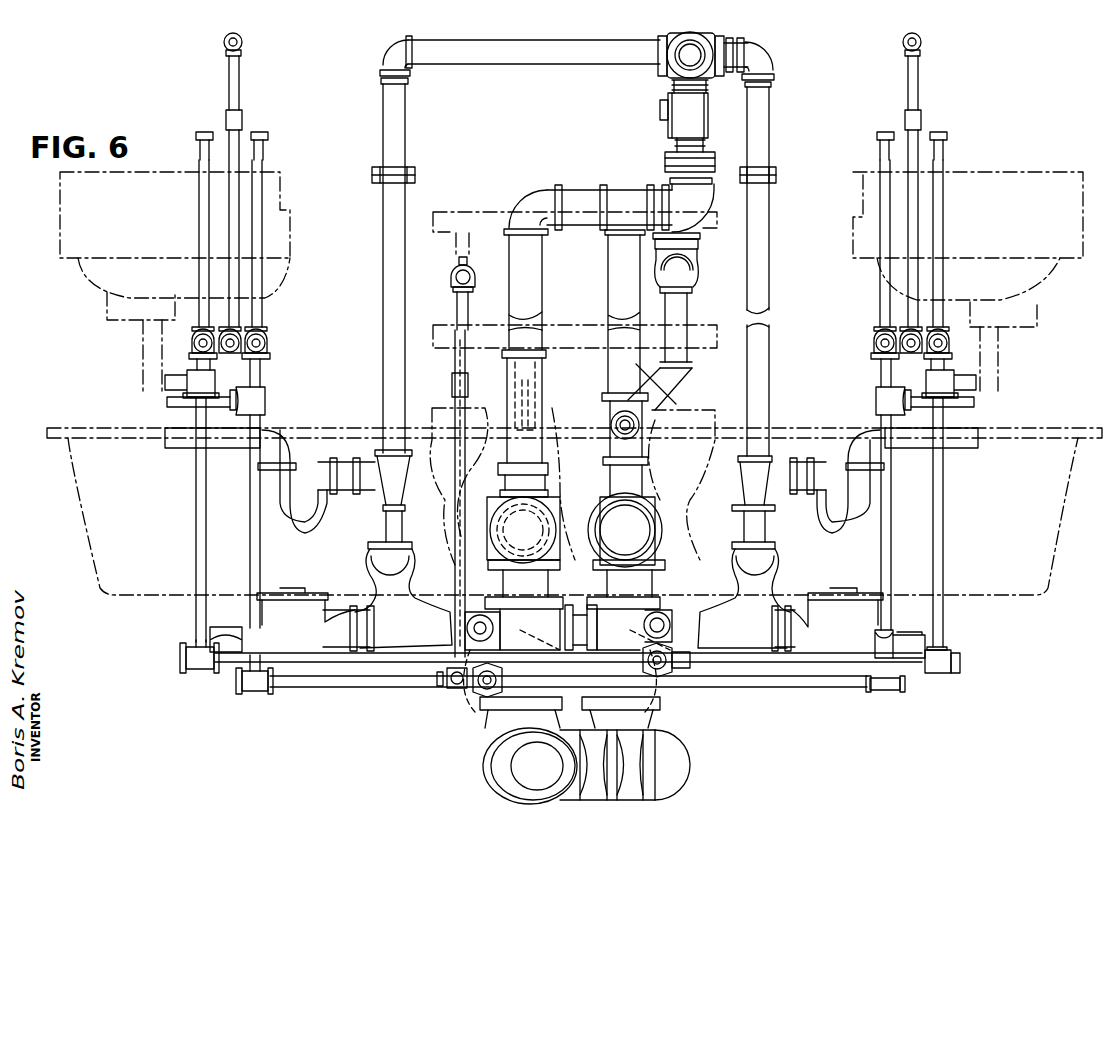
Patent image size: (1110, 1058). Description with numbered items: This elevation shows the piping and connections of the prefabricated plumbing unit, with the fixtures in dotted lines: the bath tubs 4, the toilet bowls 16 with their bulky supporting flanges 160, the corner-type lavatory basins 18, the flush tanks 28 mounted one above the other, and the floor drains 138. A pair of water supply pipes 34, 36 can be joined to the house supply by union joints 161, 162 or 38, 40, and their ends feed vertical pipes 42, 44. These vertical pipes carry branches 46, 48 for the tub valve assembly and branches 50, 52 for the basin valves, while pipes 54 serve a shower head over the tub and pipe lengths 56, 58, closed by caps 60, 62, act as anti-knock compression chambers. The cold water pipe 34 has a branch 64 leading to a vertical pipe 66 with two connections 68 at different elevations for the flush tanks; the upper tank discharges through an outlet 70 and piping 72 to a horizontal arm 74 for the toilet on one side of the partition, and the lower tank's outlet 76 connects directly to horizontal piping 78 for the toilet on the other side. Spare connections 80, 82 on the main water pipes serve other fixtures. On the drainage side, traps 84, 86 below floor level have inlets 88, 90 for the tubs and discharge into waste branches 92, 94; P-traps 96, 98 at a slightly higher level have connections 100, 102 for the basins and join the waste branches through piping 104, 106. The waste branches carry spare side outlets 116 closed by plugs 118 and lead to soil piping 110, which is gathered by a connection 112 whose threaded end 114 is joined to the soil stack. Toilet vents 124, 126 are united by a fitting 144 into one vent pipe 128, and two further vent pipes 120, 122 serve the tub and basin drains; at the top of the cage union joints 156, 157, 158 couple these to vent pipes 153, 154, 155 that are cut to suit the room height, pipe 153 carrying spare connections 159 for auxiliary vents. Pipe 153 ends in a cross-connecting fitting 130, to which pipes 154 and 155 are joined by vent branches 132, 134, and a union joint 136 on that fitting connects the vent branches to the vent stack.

The bath tub 4 is at (74, 470).
The toilet bowl 16 is at (440, 410).
The lavatory basin 18 is at (60, 190).
The flush tank 28 is at (436, 214).
The cold water supply pipe 34 is at (350, 663).
The water supply pipe 36 is at (400, 687).
The union joint 38 is at (904, 686).
The union joint 40 is at (962, 660).
The vertical pipe 42 is at (250, 556).
The vertical pipe 44 is at (196, 556).
The branch 46 is at (270, 342).
The branch 48 is at (189, 345).
The branch 50 is at (167, 401).
The branch 52 is at (165, 380).
The shower pipe 54 is at (241, 100).
The pipe length 56 is at (263, 200).
The pipe length 58 is at (200, 214).
The cap 60 is at (265, 132).
The cap 62 is at (204, 132).
The branch 64 is at (460, 690).
The vertical pipe 66 is at (455, 577).
The connection 68 is at (451, 268).
The outlet 70 is at (700, 244).
The piping 72 is at (687, 300).
The horizontal arm 74 is at (608, 430).
The outlet 76 is at (548, 360).
The horizontal piping 78 is at (545, 400).
The spare connection 80 is at (180, 658).
The spare connection 82 is at (240, 684).
The trap 84 is at (304, 647).
The trap 86 is at (844, 647).
The inlet 88 is at (228, 635).
The inlet 90 is at (915, 636).
The waste branch 92 is at (412, 633).
The waste branch 94 is at (738, 633).
The P-trap 96 is at (305, 533).
The P-trap 98 is at (835, 533).
The connection 100 is at (180, 450).
The connection 102 is at (960, 450).
The piping 104 is at (385, 528).
The piping 106 is at (765, 526).
The soil piping 110 is at (595, 586).
The connection 112 is at (562, 790).
The threaded end 114 is at (520, 774).
The side outlet 116 is at (655, 600).
The plug 118 is at (672, 622).
The vent pipe 120 is at (383, 333).
The vent pipe 122 is at (769, 312).
The toilet vent 124 is at (540, 292).
The toilet vent 126 is at (608, 294).
The vent pipe 128 is at (696, 199).
The cross-connecting fitting 130 is at (658, 44).
The vent branch 132 is at (543, 58).
The vent branch 134 is at (768, 62).
The union joint 136 is at (745, 46).
The floor drain 138 is at (460, 718).
The fitting 144 is at (622, 192).
The vent pipe 153 is at (672, 86).
The vent pipe 154 is at (405, 84).
The vent pipe 155 is at (771, 87).
The union joint 156 is at (667, 156).
The union joint 157 is at (415, 172).
The union joint 158 is at (776, 176).
The spare connection 159 is at (668, 112).
The toilet bowl supporting flange 160 is at (475, 455).
The union joint 161 is at (500, 668).
The union joint 162 is at (645, 654).